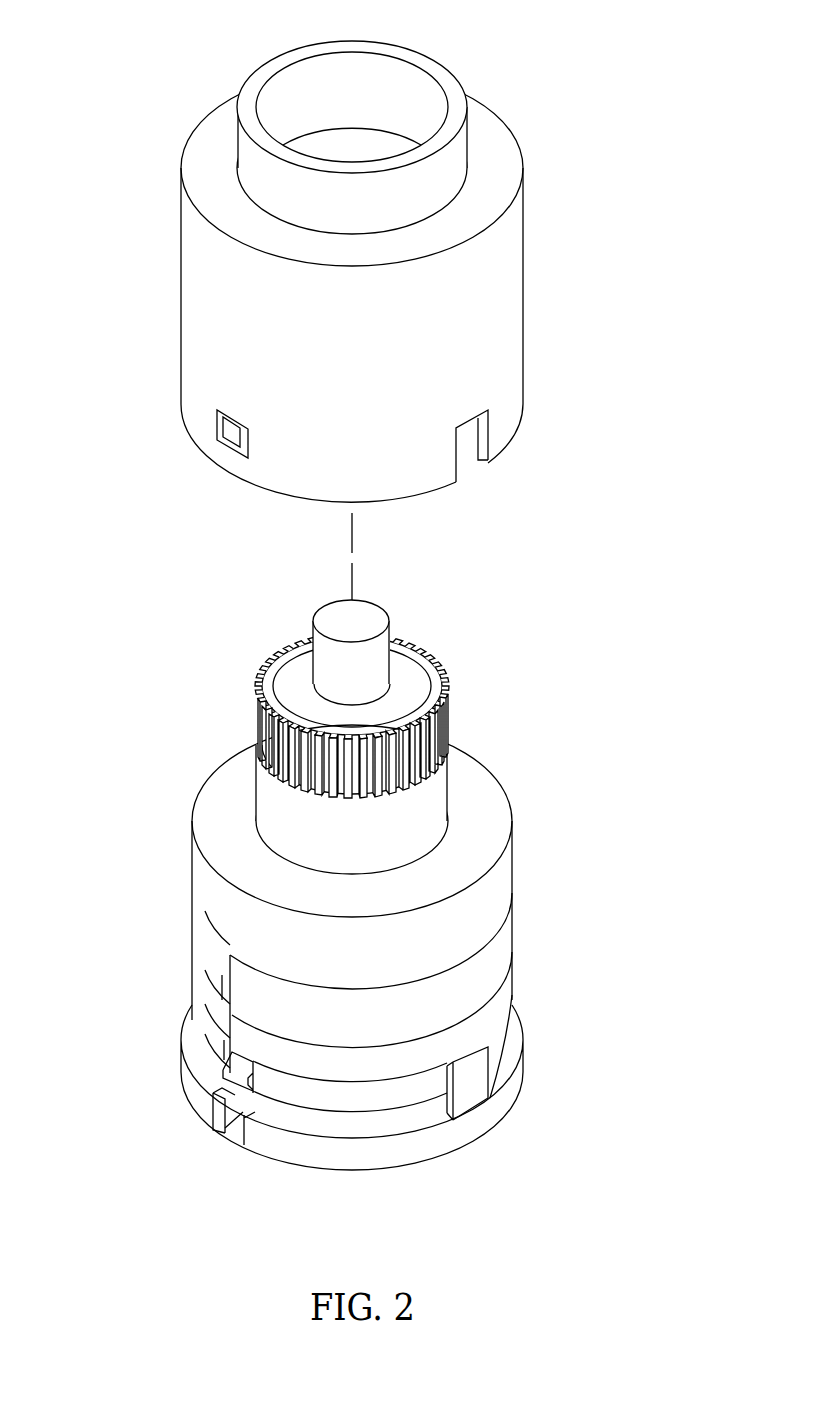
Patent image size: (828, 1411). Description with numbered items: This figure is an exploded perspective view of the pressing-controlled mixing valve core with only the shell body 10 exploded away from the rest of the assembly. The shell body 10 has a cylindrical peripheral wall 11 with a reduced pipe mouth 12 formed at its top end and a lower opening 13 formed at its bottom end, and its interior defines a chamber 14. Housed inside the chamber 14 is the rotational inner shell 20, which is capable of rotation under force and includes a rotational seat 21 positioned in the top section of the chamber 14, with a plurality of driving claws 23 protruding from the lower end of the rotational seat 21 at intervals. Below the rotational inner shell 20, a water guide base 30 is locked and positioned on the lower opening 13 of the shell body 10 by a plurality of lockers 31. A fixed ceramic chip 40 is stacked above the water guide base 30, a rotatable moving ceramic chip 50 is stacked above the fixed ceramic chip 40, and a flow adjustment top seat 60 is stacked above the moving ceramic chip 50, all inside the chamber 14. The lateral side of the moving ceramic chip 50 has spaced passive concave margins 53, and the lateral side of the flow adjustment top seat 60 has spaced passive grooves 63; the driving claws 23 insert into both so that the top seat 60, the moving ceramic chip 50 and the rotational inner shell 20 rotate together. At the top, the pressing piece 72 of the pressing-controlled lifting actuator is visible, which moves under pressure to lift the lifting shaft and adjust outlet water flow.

The shell body 10 is at (314, 269).
The cylindrical peripheral wall 11 is at (185, 307).
The reduced pipe mouth 12 is at (392, 82).
The lower opening 13 is at (475, 458).
The chamber 14 is at (357, 150).
The rotational inner shell 20 is at (310, 812).
The rotational seat 21 is at (230, 919).
The driving claws 23 is at (207, 978).
The water guide base 30 is at (365, 1094).
The lockers 31 is at (213, 1097).
The fixed ceramic chip 40 is at (500, 1042).
The moving ceramic chip 50 is at (371, 1022).
The passive concave margins 53 is at (225, 1050).
The flow adjustment top seat 60 is at (368, 966).
The passive grooves 63 is at (228, 1000).
The pressing piece 72 is at (378, 620).